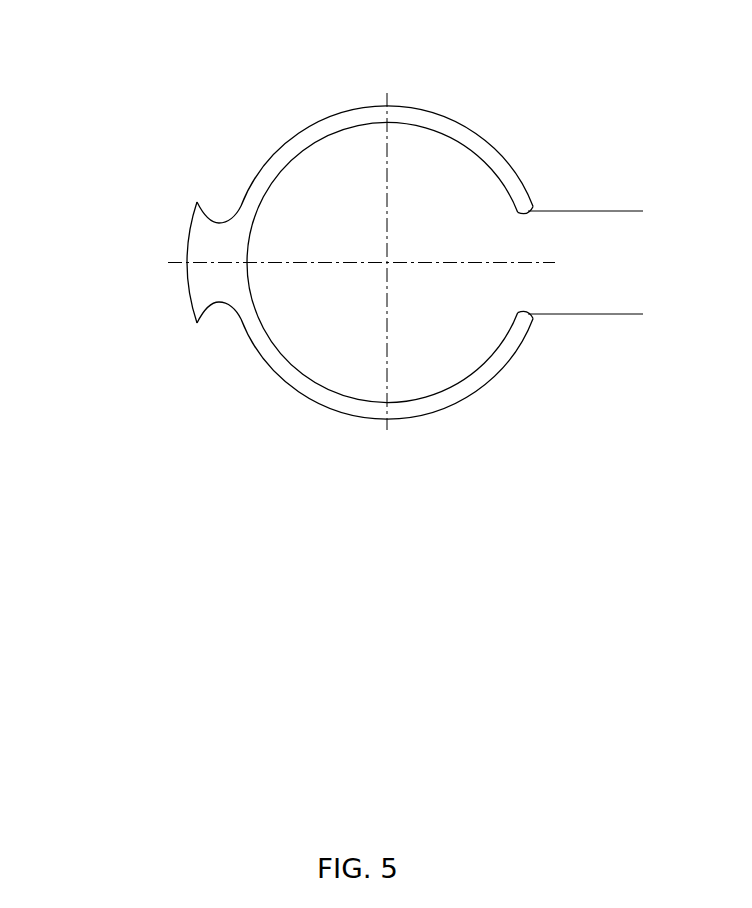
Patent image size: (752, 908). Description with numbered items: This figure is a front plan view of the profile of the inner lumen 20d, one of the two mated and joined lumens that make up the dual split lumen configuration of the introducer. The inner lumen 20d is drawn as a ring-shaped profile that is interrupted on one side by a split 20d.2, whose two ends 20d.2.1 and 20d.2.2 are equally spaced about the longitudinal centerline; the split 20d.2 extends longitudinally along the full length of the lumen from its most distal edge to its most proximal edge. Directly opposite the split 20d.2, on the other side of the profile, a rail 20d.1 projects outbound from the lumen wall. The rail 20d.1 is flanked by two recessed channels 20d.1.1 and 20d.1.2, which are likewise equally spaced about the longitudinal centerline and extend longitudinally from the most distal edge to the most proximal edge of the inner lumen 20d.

The inner lumen 20d is at (413, 105).
The rail 20d.1 is at (187, 284).
The recessed channel 20d.1.1 is at (220, 213).
The recessed channel 20d.1.2 is at (220, 312).
The split 20d.2 is at (625, 211).
The split end 20d.2.1 is at (526, 313).
The split end 20d.2.2 is at (520, 211).